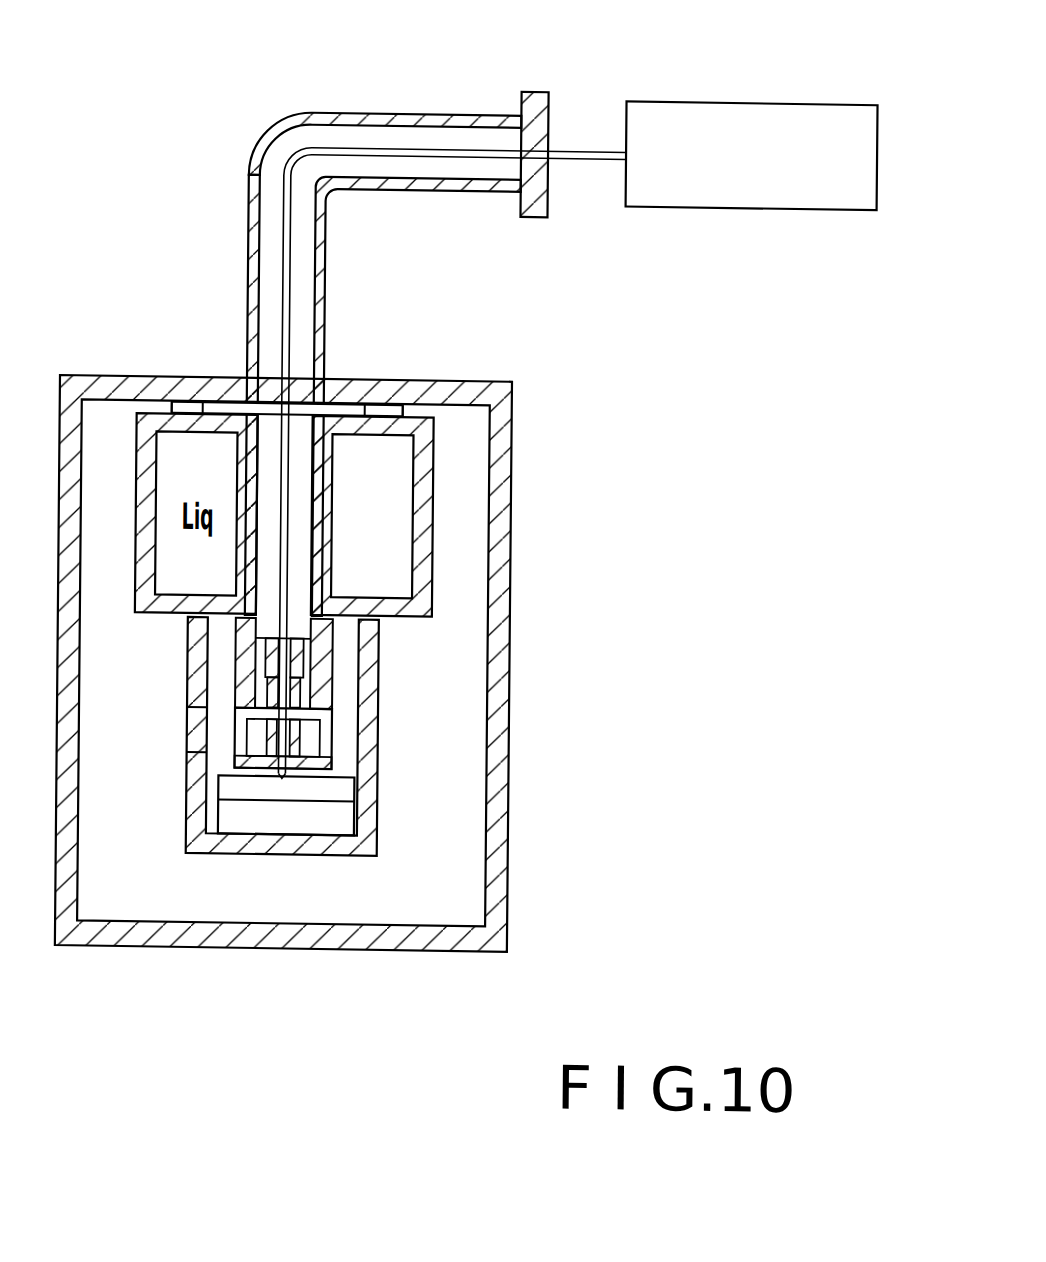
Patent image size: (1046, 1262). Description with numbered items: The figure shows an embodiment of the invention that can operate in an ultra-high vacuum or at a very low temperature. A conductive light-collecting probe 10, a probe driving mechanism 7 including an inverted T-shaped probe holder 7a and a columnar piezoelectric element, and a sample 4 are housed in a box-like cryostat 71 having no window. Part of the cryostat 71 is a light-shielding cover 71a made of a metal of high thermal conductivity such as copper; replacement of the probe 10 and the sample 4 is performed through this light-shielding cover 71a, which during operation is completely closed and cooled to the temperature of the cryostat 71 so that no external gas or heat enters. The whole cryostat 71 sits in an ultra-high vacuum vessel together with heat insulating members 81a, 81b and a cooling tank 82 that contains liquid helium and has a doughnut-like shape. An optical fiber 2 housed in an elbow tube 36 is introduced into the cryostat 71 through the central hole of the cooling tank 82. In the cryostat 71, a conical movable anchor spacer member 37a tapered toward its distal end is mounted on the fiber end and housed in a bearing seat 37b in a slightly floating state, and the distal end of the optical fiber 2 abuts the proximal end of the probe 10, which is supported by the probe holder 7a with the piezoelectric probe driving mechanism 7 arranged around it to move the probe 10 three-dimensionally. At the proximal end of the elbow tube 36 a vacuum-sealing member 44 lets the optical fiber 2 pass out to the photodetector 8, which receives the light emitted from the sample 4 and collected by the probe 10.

The optical fiber 2 is at (393, 145).
The elbow tube 36 is at (252, 159).
The vacuum-sealing member 44 is at (533, 98).
The photodetector 8 is at (830, 93).
The heat insulating member 81a is at (384, 401).
The heat insulating member 81b is at (193, 402).
The cooling tank 82 is at (389, 467).
The probe driving mechanism 7 is at (221, 704).
The probe holder 7a is at (256, 718).
The cryostat 71 is at (201, 808).
The light-shielding cover 71a is at (190, 721).
The movable anchor spacer member 37a is at (307, 636).
The bearing seat 37b is at (303, 700).
The conductive light-collecting probe 10 is at (290, 773).
The sample 4 is at (331, 815).